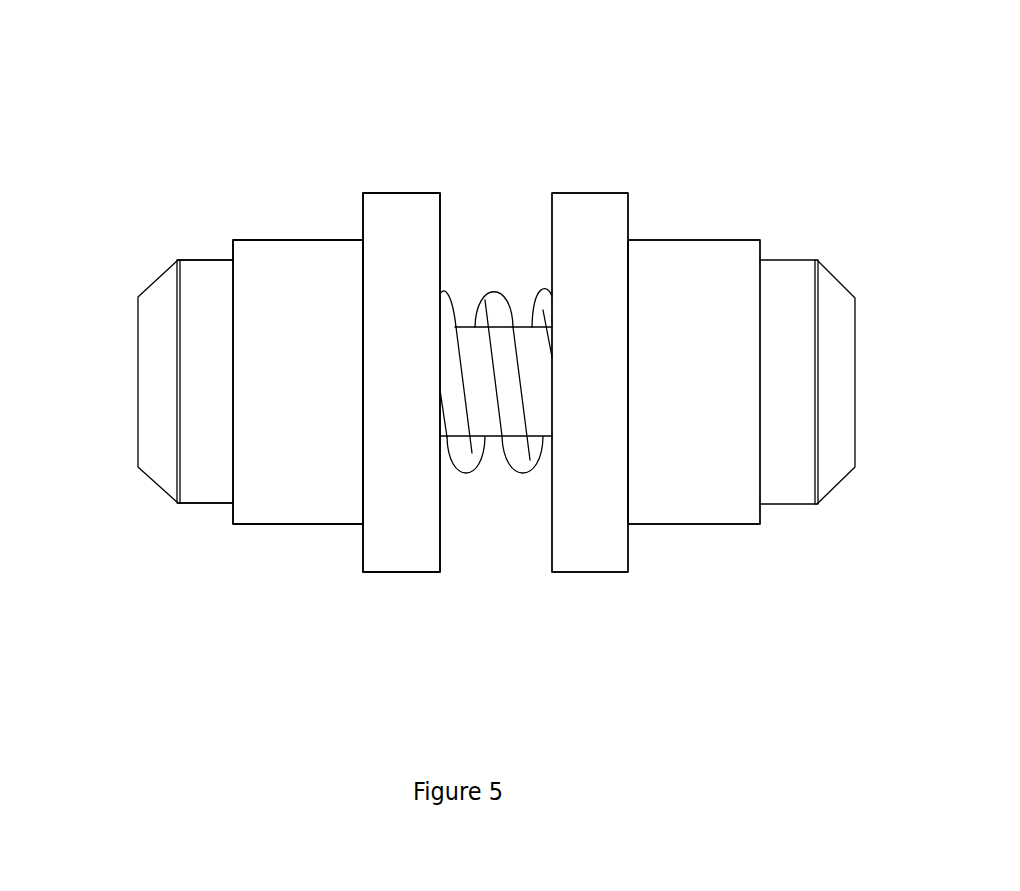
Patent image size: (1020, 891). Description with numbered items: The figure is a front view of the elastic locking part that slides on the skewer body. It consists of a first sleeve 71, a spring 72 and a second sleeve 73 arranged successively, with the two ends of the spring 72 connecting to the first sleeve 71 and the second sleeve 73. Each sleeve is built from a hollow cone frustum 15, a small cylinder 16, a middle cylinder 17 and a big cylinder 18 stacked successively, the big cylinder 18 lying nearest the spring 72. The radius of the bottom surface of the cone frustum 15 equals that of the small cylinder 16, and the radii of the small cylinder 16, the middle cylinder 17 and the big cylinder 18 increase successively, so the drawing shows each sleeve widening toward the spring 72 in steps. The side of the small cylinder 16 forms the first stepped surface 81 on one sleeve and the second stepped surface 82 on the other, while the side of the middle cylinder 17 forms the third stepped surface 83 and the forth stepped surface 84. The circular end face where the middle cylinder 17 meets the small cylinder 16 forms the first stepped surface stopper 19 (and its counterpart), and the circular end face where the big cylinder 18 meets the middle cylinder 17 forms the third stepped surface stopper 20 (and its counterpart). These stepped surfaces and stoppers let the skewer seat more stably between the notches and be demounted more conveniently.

The hollow cone frustum 15 is at (106, 381).
The small cylinder 16 is at (163, 417).
The middle cylinder 17 is at (250, 515).
The big cylinder 18 is at (603, 543).
The first stepped surface stopper 19 is at (215, 288).
The third stepped surface stopper 20 is at (304, 288).
The first sleeve 71 is at (426, 342).
The spring 72 is at (514, 295).
The second sleeve 73 is at (618, 327).
The first stepped surface 81 is at (152, 325).
The second stepped surface 82 is at (826, 325).
The third stepped surface 83 is at (280, 308).
The forth stepped surface 84 is at (710, 302).